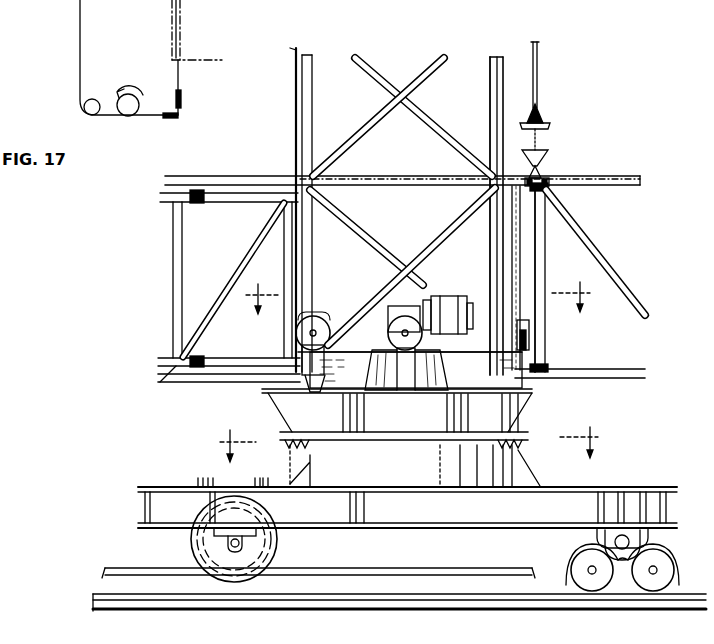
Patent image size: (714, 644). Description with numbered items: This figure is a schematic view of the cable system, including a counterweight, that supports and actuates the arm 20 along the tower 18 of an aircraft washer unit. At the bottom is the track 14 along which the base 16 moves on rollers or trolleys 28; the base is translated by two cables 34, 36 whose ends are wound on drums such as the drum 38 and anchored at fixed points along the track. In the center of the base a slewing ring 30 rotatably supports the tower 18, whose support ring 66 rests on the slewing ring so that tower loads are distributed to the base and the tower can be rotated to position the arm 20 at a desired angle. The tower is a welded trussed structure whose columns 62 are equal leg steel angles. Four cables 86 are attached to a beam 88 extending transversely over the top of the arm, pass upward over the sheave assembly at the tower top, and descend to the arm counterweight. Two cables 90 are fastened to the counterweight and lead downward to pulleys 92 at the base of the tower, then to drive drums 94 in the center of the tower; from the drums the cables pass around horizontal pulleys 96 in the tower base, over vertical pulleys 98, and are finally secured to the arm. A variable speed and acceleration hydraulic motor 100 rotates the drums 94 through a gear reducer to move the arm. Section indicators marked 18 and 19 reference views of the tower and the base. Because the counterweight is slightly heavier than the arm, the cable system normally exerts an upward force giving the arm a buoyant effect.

The track 14 is at (288, 600).
The base 16 is at (652, 478).
The tower 18 is at (419, 312).
The section line 19 is at (409, 448).
The arm 20 is at (195, 47).
The trolleys 28 is at (640, 593).
The slewing ring 30 is at (418, 476).
The cable 34 is at (132, 575).
The cable 36 is at (360, 570).
The drum 38 is at (193, 548).
The columns 62 is at (306, 58).
The support ring 66 is at (418, 421).
The cables 86 is at (538, 76).
The beam 88 is at (545, 140).
The cables 90 is at (303, 282).
The pulleys 92 is at (91, 99).
The drive drums 94 is at (135, 115).
The horizontal pulleys 96 is at (180, 118).
The vertical pulleys 98 is at (182, 96).
The hydraulic motor 100 is at (462, 305).